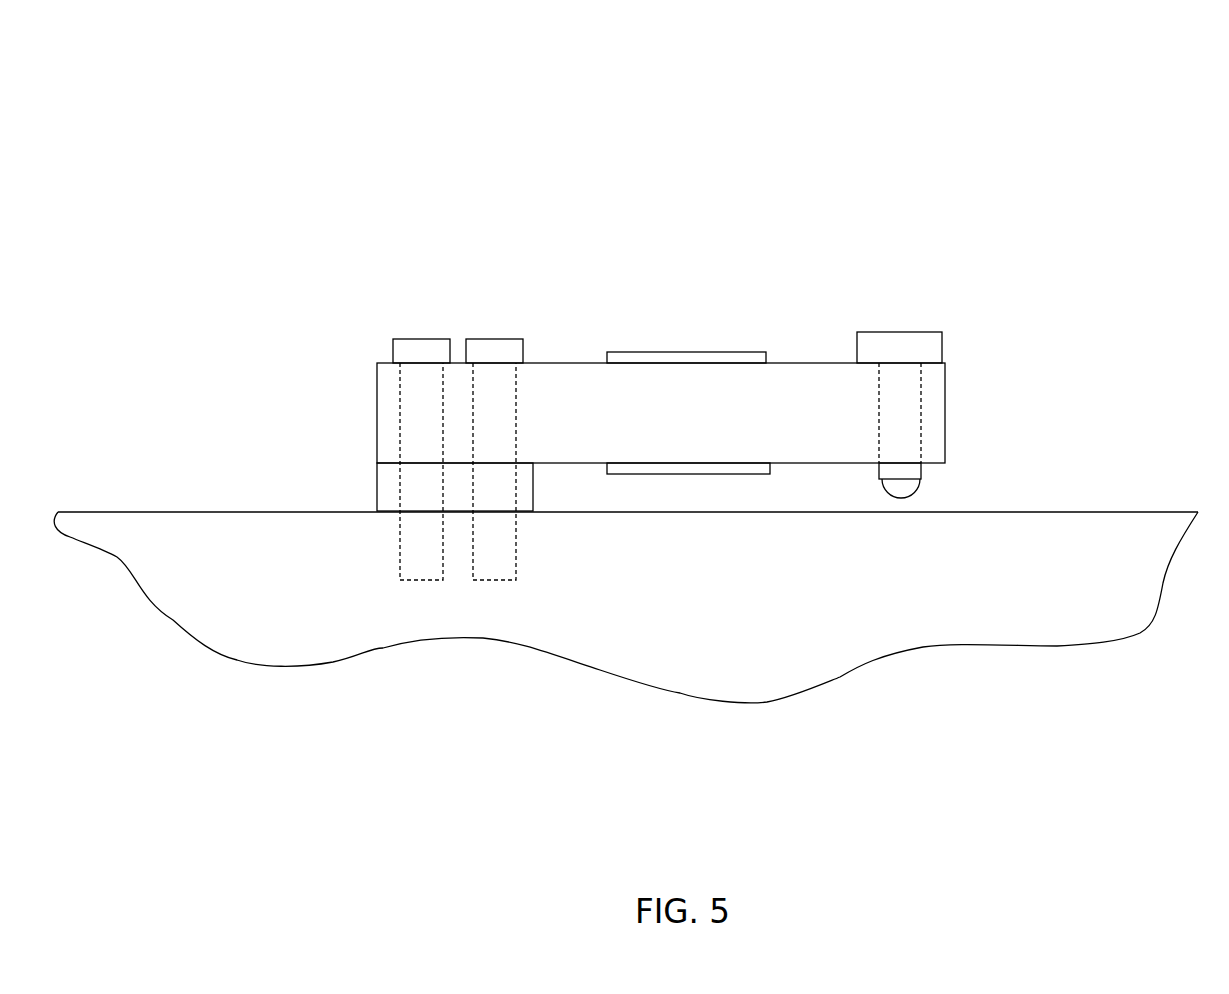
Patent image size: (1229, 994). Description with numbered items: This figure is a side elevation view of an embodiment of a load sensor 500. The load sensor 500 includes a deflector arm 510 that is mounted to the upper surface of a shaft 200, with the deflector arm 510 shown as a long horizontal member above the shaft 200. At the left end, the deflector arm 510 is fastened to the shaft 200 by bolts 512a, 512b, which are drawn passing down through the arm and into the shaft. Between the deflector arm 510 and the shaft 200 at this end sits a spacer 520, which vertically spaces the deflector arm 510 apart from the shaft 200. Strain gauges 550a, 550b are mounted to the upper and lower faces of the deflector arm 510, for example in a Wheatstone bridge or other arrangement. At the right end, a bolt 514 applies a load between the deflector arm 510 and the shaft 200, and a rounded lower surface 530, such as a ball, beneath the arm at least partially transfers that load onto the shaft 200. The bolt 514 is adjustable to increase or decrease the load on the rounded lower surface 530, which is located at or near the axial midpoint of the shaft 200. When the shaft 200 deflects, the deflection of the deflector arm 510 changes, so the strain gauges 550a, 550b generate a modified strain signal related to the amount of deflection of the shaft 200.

The load sensor 500 is at (721, 103).
The shaft 200 is at (145, 511).
The deflector arm 510 is at (377, 410).
The spacer 520 is at (376, 491).
The bolt 512a is at (428, 339).
The bolt 512b is at (500, 339).
The bolt 514 is at (900, 332).
The rounded lower surface 530 is at (923, 492).
The strain gauge 550a is at (652, 352).
The strain gauge 550b is at (652, 474).